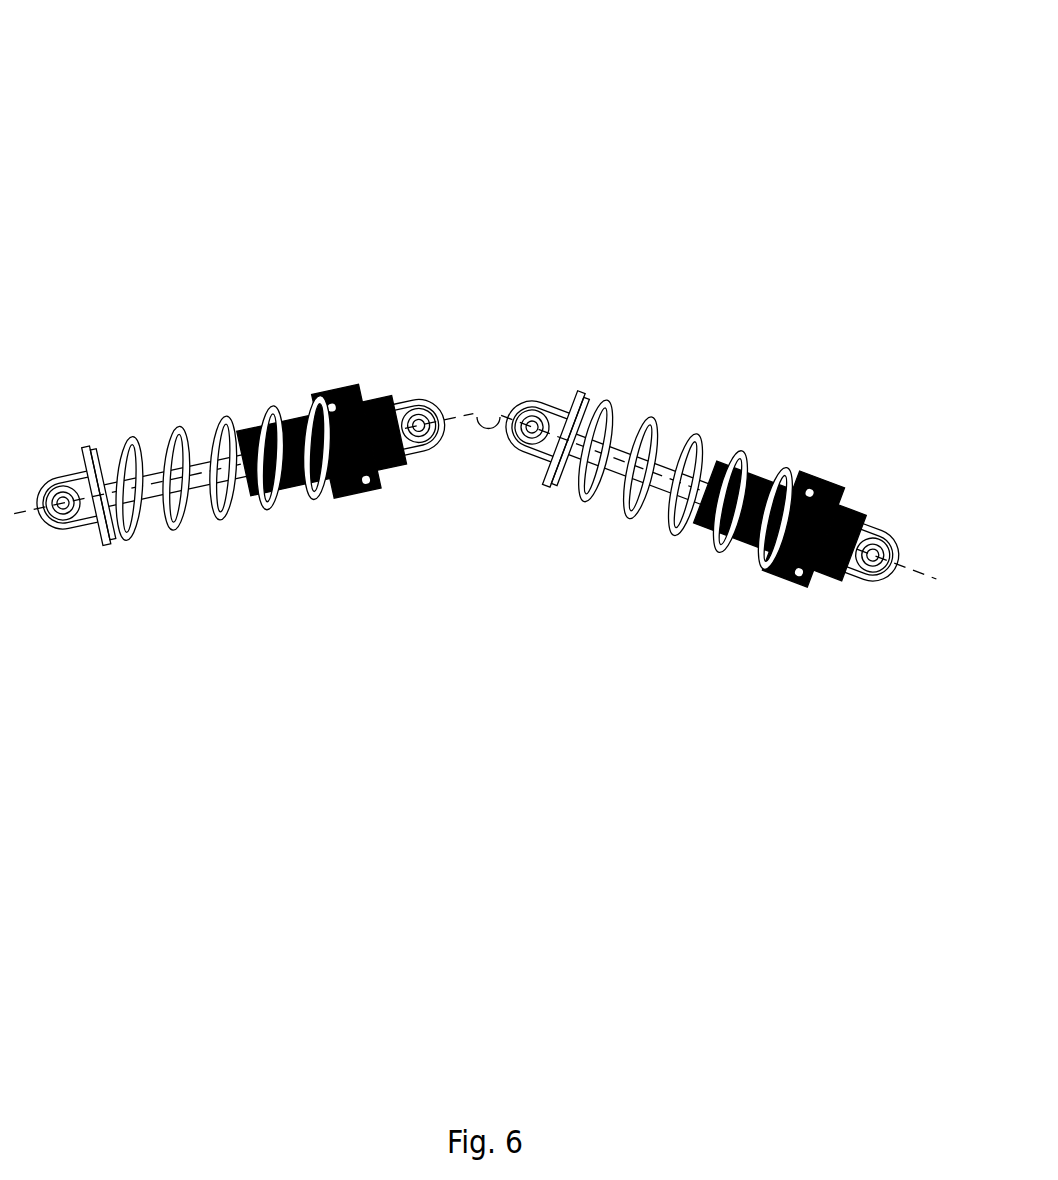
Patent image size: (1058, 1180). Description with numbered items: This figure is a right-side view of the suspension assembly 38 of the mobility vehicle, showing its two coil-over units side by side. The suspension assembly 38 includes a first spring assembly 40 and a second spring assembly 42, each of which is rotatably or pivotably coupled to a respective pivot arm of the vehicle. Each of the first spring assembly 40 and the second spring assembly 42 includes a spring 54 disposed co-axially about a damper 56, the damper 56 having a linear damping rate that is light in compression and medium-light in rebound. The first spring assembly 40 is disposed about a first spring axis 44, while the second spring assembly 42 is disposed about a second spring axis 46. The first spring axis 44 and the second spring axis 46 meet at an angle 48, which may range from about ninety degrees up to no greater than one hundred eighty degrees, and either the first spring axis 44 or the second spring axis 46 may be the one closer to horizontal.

The suspension assembly 38 is at (250, 182).
The first spring assembly 40 is at (97, 457).
The second spring assembly 42 is at (588, 398).
The first spring axis 44 is at (456, 422).
The second spring axis 46 is at (502, 420).
The angle 48 is at (483, 428).
The spring 54 is at (160, 522).
The damper 56 is at (352, 400).